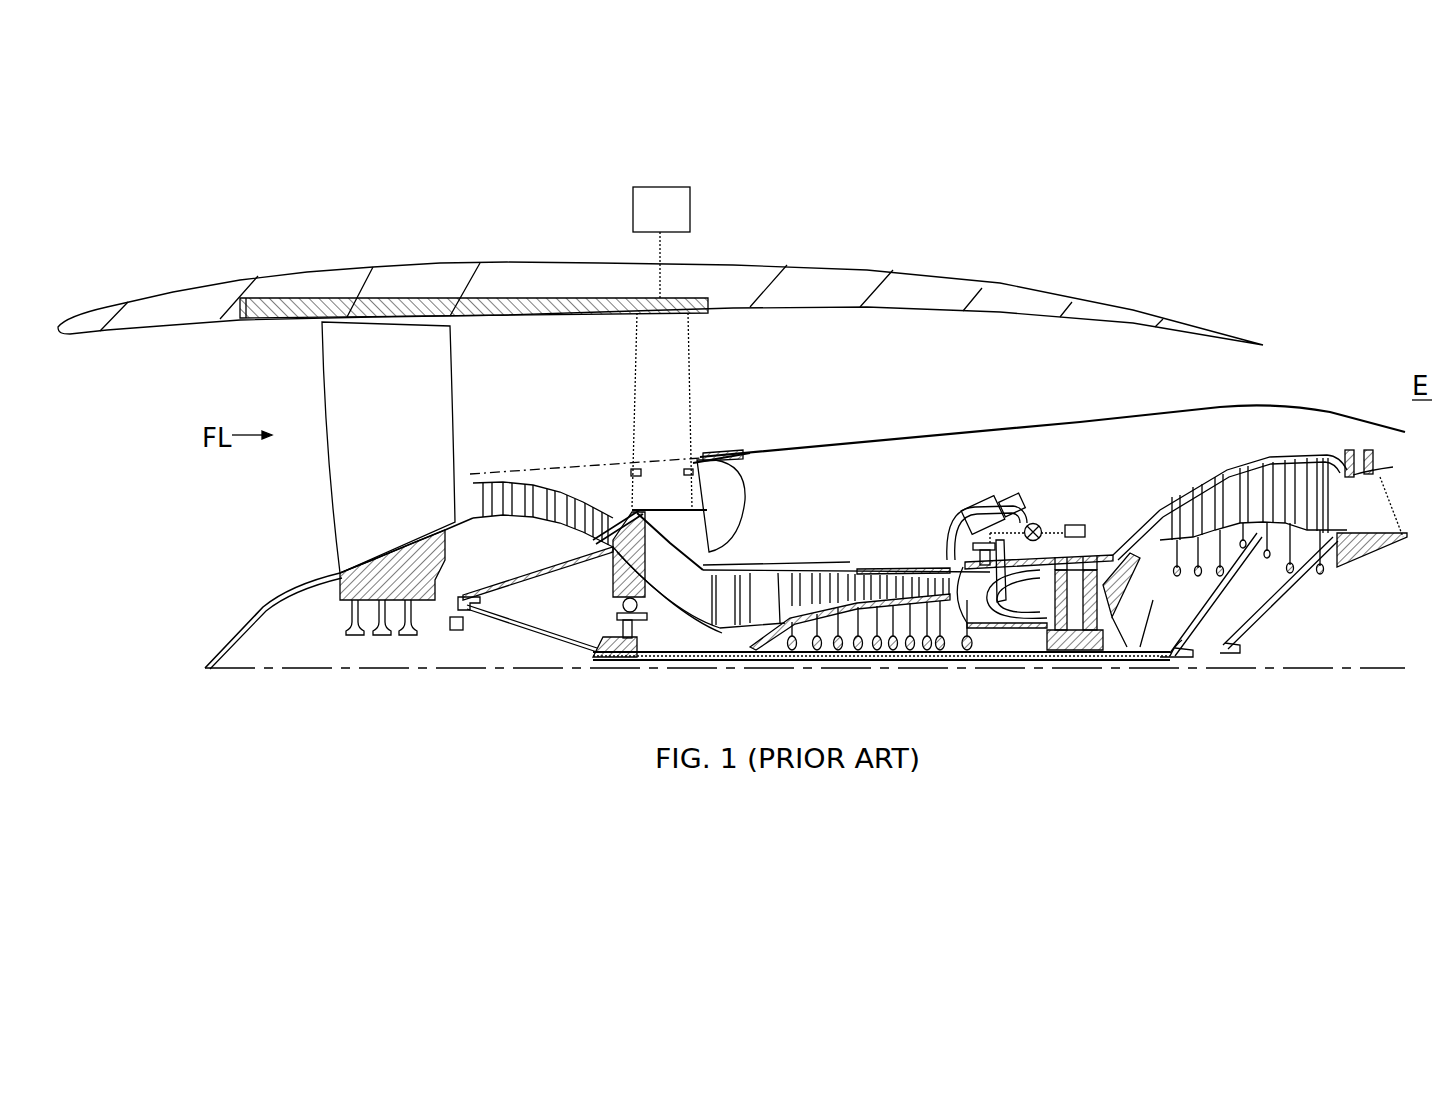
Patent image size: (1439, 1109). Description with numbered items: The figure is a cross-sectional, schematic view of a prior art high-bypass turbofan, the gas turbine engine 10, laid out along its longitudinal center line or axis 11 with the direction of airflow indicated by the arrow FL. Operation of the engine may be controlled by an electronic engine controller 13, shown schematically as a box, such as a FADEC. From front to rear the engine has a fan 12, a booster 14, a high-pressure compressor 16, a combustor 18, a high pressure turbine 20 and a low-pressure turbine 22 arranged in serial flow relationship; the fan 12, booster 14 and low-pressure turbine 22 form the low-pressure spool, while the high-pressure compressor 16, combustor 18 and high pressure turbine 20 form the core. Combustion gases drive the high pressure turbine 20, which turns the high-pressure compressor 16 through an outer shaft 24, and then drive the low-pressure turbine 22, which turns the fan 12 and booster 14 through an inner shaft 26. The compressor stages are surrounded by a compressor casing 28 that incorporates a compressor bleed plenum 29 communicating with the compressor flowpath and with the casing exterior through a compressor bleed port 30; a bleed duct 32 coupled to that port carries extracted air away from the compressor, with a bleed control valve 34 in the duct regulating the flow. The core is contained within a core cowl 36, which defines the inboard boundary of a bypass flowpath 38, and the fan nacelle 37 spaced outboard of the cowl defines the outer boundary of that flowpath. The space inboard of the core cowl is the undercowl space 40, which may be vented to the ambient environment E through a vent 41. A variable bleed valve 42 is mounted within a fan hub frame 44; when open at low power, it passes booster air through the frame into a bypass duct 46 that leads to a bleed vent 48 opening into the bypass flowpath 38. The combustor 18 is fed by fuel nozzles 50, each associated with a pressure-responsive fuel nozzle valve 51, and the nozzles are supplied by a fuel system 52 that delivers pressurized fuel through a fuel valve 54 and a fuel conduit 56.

The gas turbine engine 10 is at (803, 216).
The longitudinal center line or axis 11 is at (243, 672).
The fan 12 is at (399, 447).
The electronic engine controller 13 is at (676, 225).
The booster 14 is at (472, 497).
The high-pressure compressor 16 is at (746, 650).
The combustor 18 is at (1030, 613).
The high pressure turbine 20 is at (1090, 658).
The low-pressure turbine 22 is at (1287, 563).
The outer shaft 24 is at (1017, 620).
The inner shaft 26 is at (613, 658).
The compressor casing 28 is at (810, 573).
The compressor bleed plenum 29 is at (935, 563).
The compressor bleed port 30 is at (953, 567).
The bleed duct 32 is at (951, 527).
The bleed control valve 34 is at (985, 503).
The core cowl 36 is at (1080, 420).
The fan nacelle 37 is at (897, 287).
The bypass flowpath 38 is at (898, 358).
The undercowl space 40 is at (1210, 425).
The vent 41 is at (1413, 440).
The variable bleed valve 42 is at (627, 520).
The fan hub frame 44 is at (630, 473).
The bypass duct 46 is at (740, 495).
The bleed vent 48 is at (717, 453).
The fuel nozzle 50 is at (1003, 607).
The fuel nozzle valve 51 is at (1000, 555).
The fuel system 52 is at (1097, 520).
The fuel valve 54 is at (1040, 513).
The fuel conduit 56 is at (1025, 523).